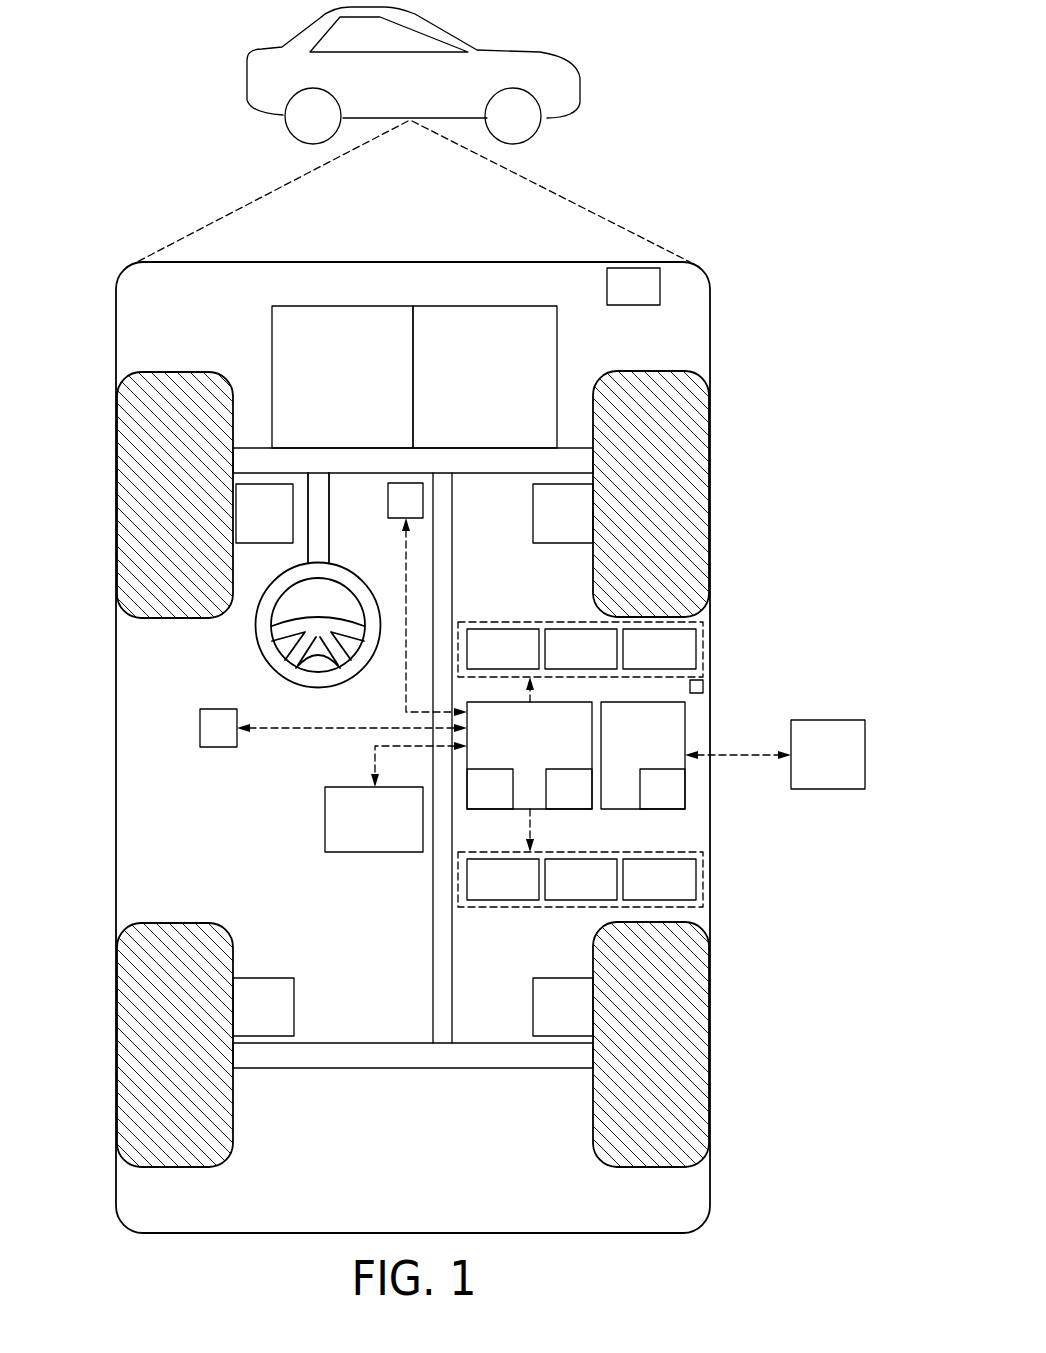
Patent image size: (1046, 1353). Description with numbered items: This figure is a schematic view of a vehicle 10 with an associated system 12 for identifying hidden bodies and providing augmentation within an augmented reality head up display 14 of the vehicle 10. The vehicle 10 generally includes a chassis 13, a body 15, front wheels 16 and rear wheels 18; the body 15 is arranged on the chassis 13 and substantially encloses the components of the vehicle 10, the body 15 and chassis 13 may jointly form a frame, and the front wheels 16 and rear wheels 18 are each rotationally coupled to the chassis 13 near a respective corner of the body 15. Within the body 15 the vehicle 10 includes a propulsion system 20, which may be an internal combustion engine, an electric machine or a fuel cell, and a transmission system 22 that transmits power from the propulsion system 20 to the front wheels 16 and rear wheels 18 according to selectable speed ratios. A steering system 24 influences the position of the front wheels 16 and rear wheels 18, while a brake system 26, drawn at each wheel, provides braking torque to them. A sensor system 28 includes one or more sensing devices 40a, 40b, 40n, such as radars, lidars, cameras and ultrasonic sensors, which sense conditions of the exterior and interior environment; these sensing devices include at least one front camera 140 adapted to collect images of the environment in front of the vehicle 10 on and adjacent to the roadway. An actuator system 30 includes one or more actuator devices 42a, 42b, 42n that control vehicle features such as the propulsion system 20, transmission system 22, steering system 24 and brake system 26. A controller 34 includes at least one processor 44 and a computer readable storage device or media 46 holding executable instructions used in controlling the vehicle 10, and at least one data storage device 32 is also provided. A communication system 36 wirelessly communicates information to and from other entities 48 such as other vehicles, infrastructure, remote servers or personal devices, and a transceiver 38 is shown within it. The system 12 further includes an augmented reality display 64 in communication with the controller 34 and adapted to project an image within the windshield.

The vehicle 10 is at (398, 98).
The system 12 is at (702, 236).
The chassis 13 is at (433, 953).
The augmented reality head up display 14 is at (393, 513).
The body 15 is at (116, 748).
The front wheels 16 is at (177, 372).
The rear wheels 18 is at (177, 1168).
The propulsion system 20 is at (328, 391).
The transmission system 22 is at (471, 391).
The steering system 24 is at (342, 511).
The brake system 26 is at (250, 526).
The sensor system 28 is at (547, 622).
The actuator system 30 is at (557, 907).
The data storage device 32 is at (360, 833).
The controller 34 is at (516, 749).
The communication system 36 is at (629, 749).
The transceiver 38 is at (649, 802).
The sensing device 40a is at (483, 662).
The sensing device 40b is at (561, 662).
The sensing device 40n is at (640, 662).
The actuator device 42a is at (483, 893).
The actuator device 42b is at (561, 893).
The actuator device 42n is at (640, 893).
The processor 44 is at (476, 802).
The computer readable storage device or media 46 is at (555, 802).
The other entities 48 is at (814, 768).
The augmented reality display 64 is at (205, 741).
The front camera 140 is at (613, 300).